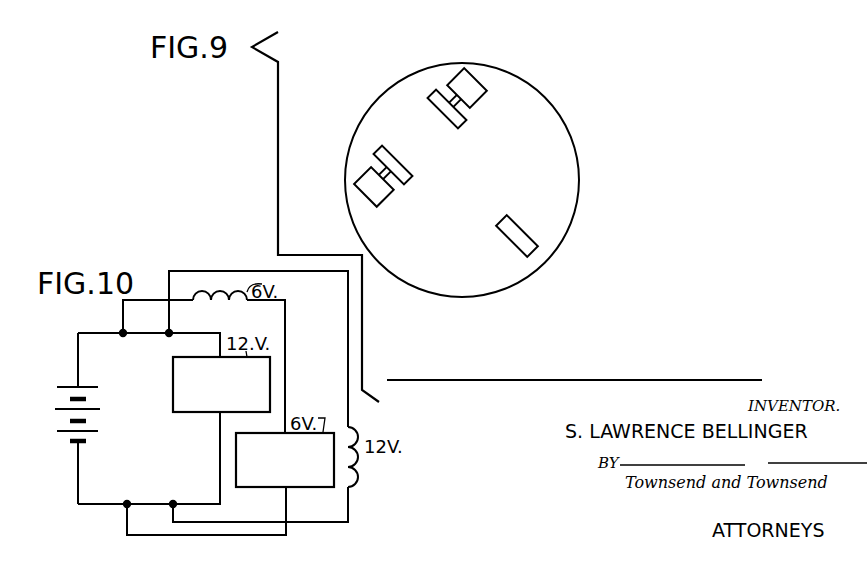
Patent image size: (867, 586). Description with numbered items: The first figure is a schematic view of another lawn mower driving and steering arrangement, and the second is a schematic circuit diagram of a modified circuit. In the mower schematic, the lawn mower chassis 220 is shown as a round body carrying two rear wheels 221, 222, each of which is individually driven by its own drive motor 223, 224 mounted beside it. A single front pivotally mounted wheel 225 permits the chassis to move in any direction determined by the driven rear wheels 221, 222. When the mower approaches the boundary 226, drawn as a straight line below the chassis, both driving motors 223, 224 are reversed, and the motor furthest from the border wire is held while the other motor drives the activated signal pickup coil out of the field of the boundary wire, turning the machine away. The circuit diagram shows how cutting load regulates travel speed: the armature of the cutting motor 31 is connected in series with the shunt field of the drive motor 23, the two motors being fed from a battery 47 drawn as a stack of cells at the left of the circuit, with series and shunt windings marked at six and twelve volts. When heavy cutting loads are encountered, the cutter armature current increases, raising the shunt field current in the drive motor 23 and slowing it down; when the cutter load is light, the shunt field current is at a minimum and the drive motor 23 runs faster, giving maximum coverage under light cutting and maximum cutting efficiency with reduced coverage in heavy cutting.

In FIG. 9, the lawn mower chassis 220 is at (523, 83).
In FIG. 9, the rear wheel 221 is at (431, 97).
In FIG. 9, the rear wheel 222 is at (380, 152).
In FIG. 9, the drive motor 223 is at (459, 80).
In FIG. 9, the drive motor 224 is at (361, 183).
In FIG. 9, the front pivotally mounted wheel 225 is at (522, 219).
In FIG. 9, the boundary 226 is at (565, 380).
In FIG. 10, the cutting motor 31 is at (194, 412).
In FIG. 10, the drive motor 23 is at (236, 466).
In FIG. 10, the battery 47 is at (89, 438).